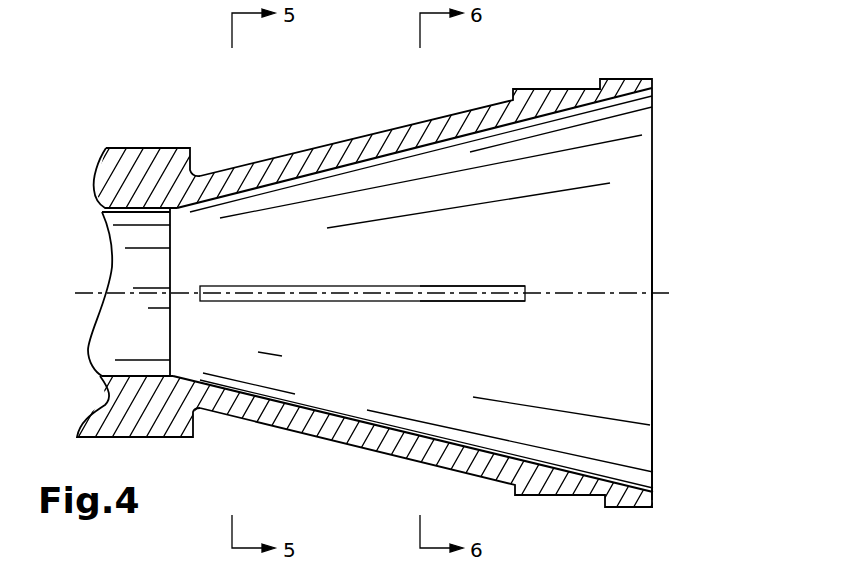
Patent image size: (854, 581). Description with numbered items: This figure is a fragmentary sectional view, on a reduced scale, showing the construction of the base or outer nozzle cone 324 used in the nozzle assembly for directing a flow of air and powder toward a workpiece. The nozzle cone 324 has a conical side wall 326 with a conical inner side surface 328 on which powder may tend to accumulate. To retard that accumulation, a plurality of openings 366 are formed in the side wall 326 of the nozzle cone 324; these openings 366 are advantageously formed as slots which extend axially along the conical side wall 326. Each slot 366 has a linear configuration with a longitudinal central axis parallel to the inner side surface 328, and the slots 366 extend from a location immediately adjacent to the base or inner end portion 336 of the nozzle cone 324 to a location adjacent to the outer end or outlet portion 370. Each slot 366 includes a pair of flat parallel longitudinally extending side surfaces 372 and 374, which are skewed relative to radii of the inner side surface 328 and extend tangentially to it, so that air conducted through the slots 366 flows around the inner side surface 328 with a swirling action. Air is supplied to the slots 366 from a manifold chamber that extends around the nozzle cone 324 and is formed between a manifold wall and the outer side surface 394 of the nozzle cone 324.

The outer nozzle cone 324 is at (483, 106).
The conical side wall 326 is at (360, 153).
The conical inner side surface 328 is at (638, 397).
The inner end portion 336 is at (157, 173).
The openings 366 is at (323, 285).
The outlet portion 370 is at (635, 227).
The side surface 372 is at (445, 302).
The side surface 374 is at (455, 286).
The outer side surface 394 is at (415, 463).